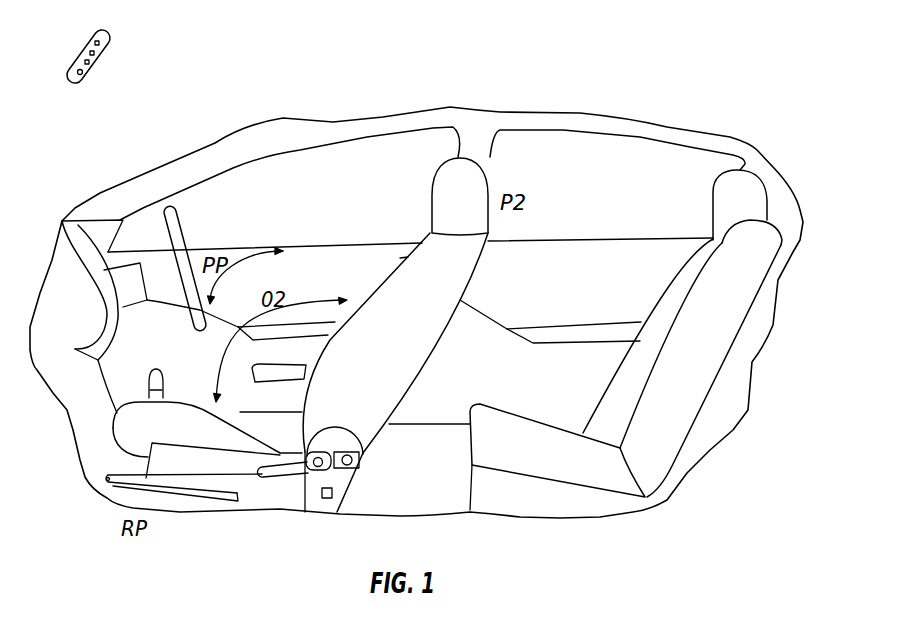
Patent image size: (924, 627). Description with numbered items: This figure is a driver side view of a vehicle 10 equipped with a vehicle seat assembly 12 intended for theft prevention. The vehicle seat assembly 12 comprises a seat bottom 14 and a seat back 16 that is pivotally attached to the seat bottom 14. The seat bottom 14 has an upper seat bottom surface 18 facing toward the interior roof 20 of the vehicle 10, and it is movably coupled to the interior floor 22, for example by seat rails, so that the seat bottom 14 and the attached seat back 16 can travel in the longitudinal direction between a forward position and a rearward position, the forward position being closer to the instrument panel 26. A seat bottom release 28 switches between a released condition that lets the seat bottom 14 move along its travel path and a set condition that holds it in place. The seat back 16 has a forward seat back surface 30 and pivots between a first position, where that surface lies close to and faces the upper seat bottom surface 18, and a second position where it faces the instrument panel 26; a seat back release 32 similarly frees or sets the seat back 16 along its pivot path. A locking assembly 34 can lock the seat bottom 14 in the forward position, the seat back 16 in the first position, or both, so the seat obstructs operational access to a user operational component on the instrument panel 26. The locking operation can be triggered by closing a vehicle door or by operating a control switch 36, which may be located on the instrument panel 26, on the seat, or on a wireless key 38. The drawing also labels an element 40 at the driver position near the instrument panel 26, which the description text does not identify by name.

The vehicle 10 is at (670, 83).
The vehicle seat assembly 12 is at (329, 319).
The seat bottom 14 is at (101, 427).
The seat back 16 is at (431, 369).
The upper seat bottom surface 18 is at (170, 402).
The interior roof 20 is at (233, 152).
The interior floor 22 is at (190, 510).
The instrument panel 26 is at (87, 242).
The seat bottom release 28 is at (127, 488).
The forward seat back surface 30 is at (400, 258).
The seat back release 32 is at (280, 476).
The locking assembly 34 is at (360, 460).
The control switch 36 is at (335, 494).
The wireless key 38 is at (113, 34).
The steering wheel 40 is at (180, 230).